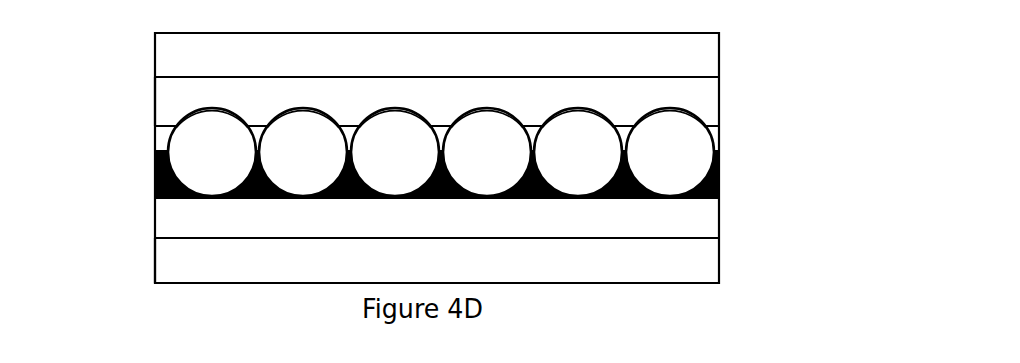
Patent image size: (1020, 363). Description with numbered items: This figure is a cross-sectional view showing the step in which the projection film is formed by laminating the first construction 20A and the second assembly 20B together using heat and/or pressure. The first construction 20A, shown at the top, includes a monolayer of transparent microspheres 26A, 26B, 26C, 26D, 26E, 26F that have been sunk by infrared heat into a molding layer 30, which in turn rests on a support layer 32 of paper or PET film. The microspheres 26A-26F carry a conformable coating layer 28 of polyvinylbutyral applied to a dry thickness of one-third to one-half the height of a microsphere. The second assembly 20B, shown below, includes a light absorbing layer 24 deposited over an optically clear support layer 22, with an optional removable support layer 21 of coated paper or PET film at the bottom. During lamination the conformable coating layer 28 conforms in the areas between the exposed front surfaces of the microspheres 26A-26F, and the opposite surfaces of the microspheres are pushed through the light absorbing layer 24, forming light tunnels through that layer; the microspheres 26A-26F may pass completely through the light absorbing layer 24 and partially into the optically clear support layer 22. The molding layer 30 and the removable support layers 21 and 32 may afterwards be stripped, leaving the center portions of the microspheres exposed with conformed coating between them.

The first construction 20A is at (719, 33).
The second assembly 20B is at (719, 283).
The removable support layer 21 is at (220, 259).
The optically clear support layer 22 is at (212, 215).
The light absorbing layer 24 is at (153, 182).
The transparent microsphere 26A is at (212, 152).
The transparent microsphere 26B is at (303, 152).
The transparent microsphere 26C is at (395, 152).
The transparent microsphere 26D is at (487, 152).
The transparent microsphere 26E is at (578, 152).
The transparent microsphere 26F is at (670, 152).
The conformable coating layer 28 is at (172, 127).
The molding layer 30 is at (217, 89).
The support layer 32 is at (202, 55).